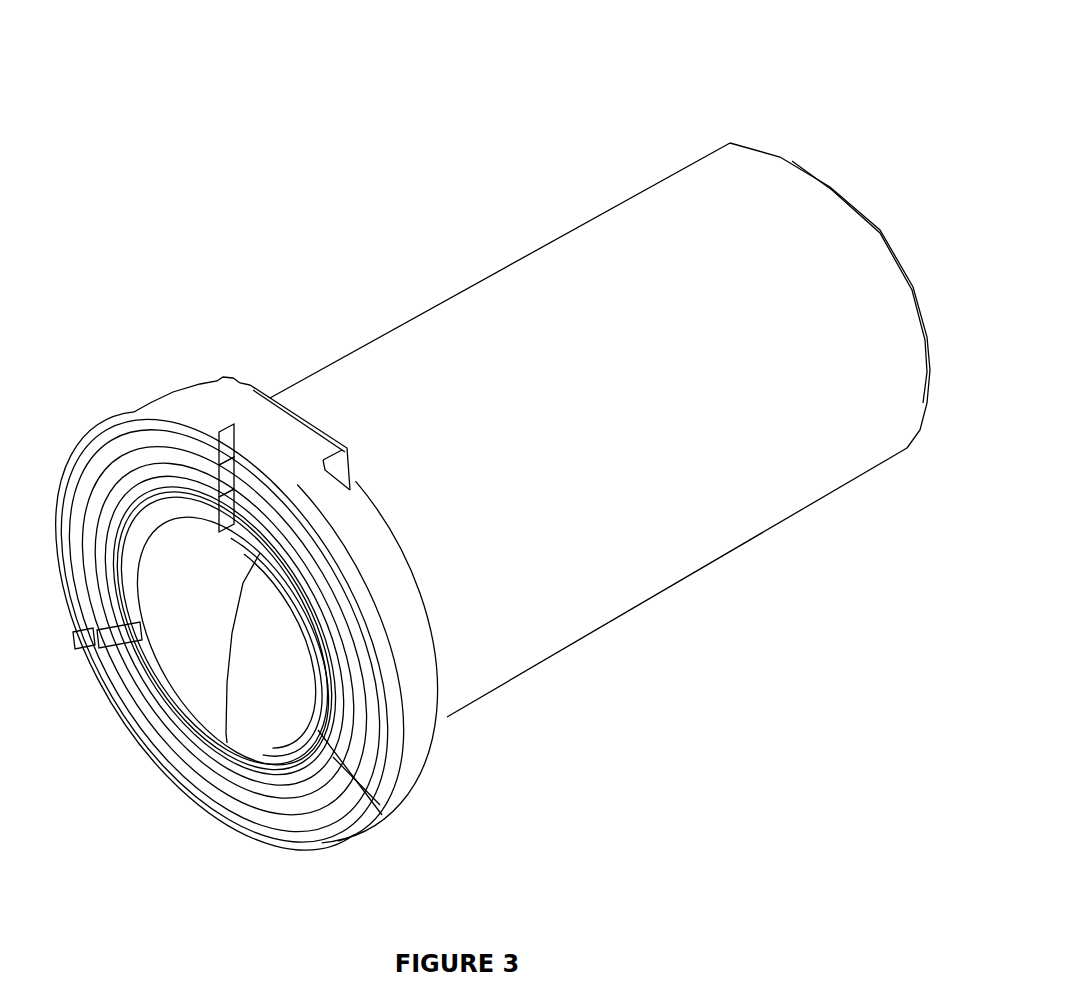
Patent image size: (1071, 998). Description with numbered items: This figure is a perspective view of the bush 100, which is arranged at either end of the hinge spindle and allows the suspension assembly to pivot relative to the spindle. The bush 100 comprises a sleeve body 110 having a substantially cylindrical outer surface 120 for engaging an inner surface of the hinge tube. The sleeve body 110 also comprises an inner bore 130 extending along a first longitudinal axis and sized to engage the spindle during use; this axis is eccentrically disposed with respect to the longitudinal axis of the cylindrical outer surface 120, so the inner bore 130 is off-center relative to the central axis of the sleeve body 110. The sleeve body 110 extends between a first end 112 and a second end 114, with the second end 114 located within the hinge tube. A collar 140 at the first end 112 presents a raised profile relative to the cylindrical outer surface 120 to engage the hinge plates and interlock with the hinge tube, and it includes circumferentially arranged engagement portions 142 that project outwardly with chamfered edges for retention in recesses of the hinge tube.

The bush 100 is at (468, 457).
The sleeve body 110 is at (603, 407).
The first end 112 is at (447, 717).
The second end 114 is at (880, 237).
The cylindrical outer surface 120 is at (664, 426).
The inner bore 130 is at (205, 650).
The collar 140 is at (227, 564).
The engagement portions 142 is at (272, 413).